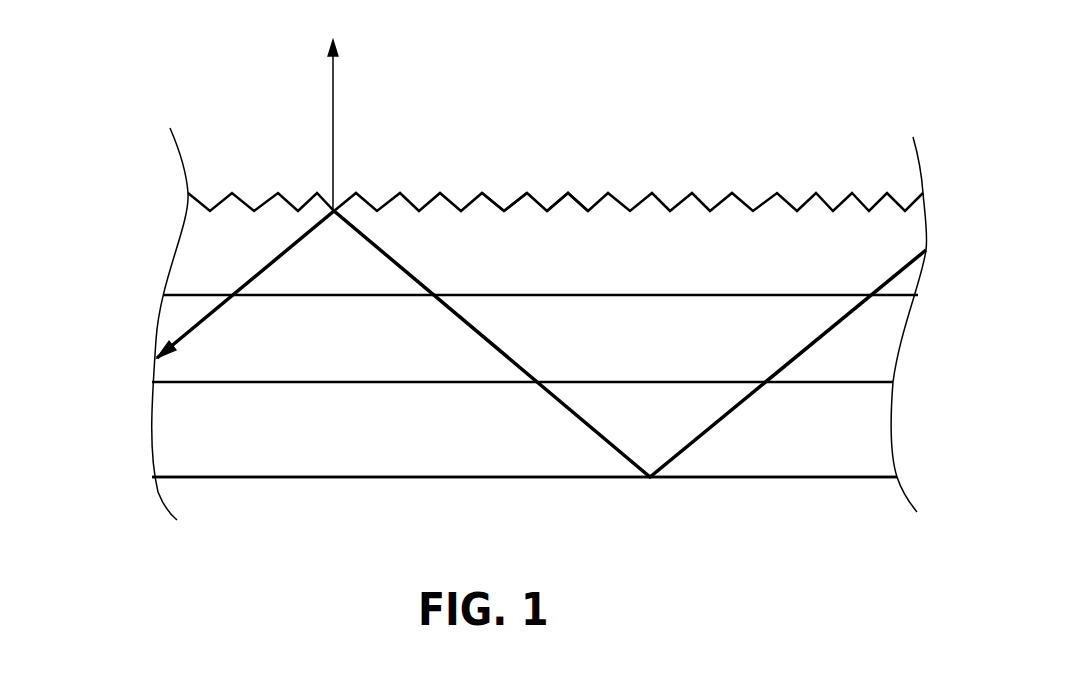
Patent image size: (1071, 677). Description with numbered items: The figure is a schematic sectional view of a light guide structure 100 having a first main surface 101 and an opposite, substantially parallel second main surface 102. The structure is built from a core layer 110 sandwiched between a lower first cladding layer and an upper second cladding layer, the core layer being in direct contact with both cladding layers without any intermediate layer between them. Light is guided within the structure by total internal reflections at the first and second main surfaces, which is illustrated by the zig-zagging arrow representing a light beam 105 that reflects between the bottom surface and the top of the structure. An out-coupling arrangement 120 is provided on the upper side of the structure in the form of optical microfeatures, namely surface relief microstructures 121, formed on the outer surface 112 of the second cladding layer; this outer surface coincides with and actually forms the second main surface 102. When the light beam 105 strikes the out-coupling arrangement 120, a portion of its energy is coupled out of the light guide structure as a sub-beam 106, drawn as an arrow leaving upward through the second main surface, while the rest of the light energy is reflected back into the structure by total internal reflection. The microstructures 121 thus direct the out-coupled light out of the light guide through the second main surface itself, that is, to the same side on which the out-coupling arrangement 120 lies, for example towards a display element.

The light guide structure 100 is at (218, 117).
The first main surface 101 is at (710, 477).
The second main surface 102 is at (711, 210).
The light beam 105 is at (795, 353).
The sub-beam 106 is at (333, 125).
The core layer 110 is at (178, 315).
The outer surface 112 is at (504, 205).
The out-coupling arrangement 120 is at (617, 170).
The surface relief microstructures 121 is at (567, 197).